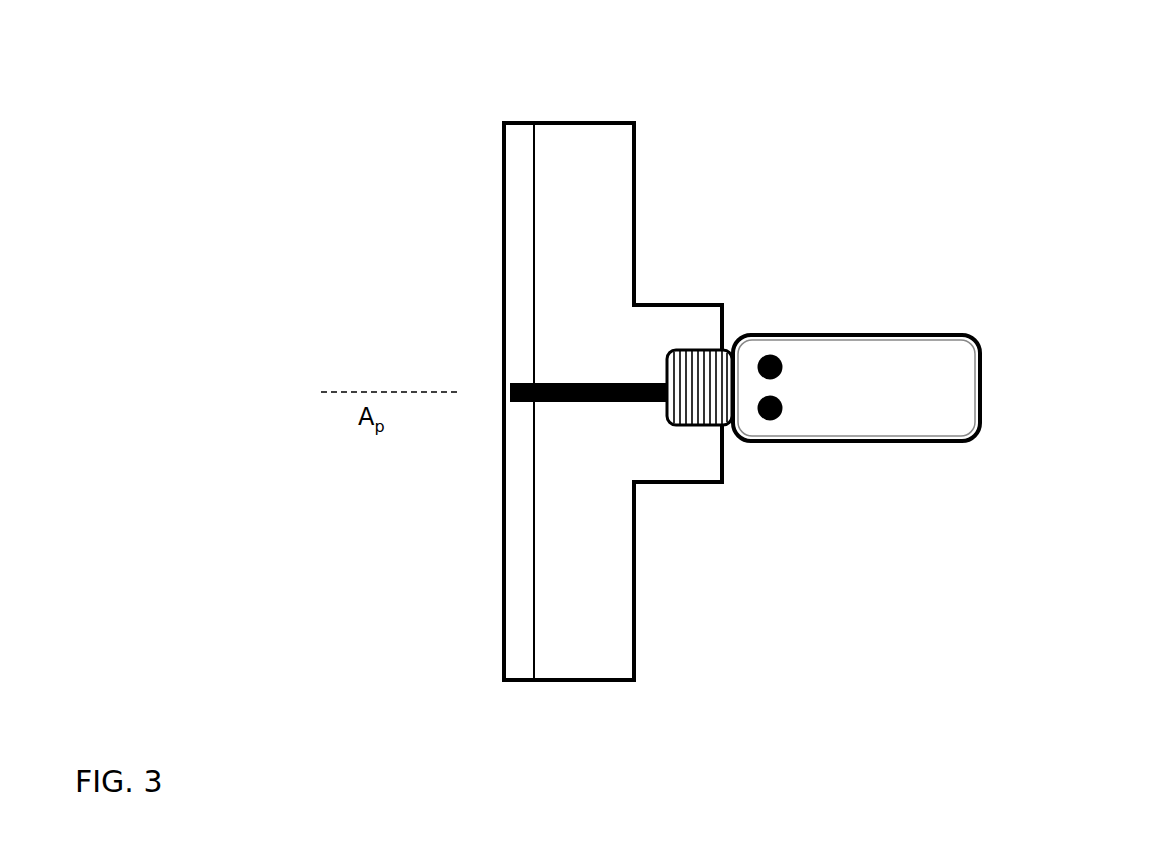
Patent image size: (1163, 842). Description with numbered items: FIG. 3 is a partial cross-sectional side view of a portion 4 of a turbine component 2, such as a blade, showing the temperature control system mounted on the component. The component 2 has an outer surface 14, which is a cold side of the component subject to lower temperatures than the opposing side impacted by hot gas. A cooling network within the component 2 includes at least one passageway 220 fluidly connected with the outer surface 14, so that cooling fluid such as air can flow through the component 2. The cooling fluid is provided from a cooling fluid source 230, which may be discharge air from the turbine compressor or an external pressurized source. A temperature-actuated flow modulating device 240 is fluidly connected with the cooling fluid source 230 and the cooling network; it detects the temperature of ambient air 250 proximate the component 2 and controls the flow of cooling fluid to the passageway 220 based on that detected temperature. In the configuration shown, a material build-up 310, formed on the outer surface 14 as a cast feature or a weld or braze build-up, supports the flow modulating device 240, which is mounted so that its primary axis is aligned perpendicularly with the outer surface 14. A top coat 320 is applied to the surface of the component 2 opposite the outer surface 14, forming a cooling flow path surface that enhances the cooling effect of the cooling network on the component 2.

The portion 4 is at (1058, 60).
The turbine component 2 is at (585, 194).
The outer surface 14 is at (627, 188).
The top coat 320 is at (526, 177).
The material build-up 310 is at (668, 305).
The passageway 220 is at (562, 356).
The cooling fluid source 230 is at (772, 418).
The temperature-actuated flow modulating device 240 is at (965, 396).
The ambient air 250 is at (829, 226).